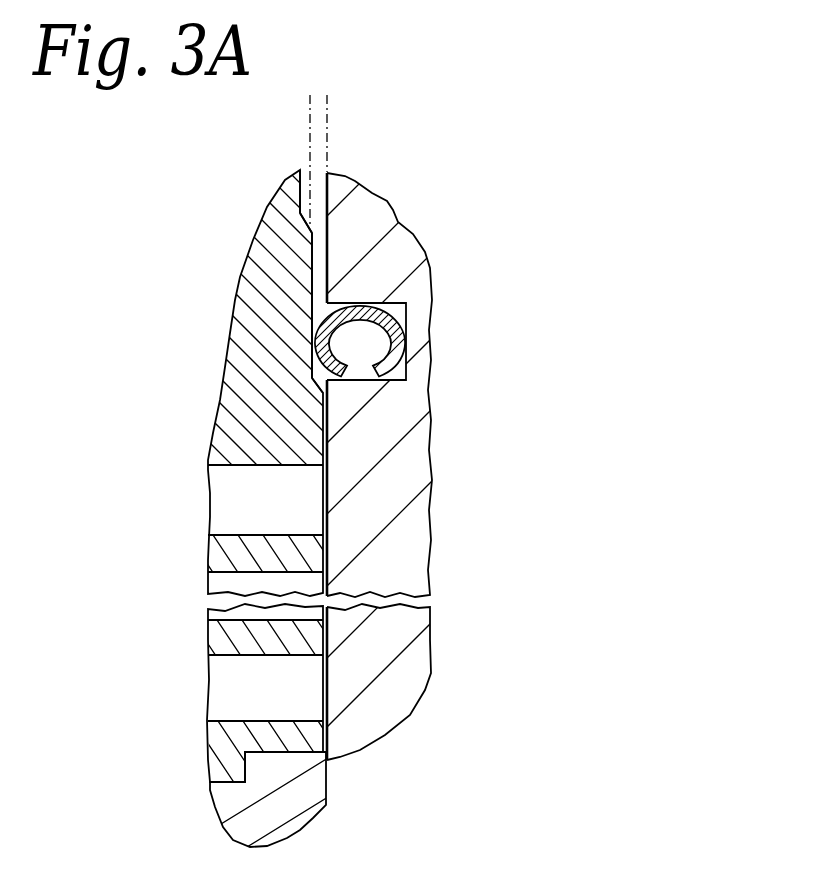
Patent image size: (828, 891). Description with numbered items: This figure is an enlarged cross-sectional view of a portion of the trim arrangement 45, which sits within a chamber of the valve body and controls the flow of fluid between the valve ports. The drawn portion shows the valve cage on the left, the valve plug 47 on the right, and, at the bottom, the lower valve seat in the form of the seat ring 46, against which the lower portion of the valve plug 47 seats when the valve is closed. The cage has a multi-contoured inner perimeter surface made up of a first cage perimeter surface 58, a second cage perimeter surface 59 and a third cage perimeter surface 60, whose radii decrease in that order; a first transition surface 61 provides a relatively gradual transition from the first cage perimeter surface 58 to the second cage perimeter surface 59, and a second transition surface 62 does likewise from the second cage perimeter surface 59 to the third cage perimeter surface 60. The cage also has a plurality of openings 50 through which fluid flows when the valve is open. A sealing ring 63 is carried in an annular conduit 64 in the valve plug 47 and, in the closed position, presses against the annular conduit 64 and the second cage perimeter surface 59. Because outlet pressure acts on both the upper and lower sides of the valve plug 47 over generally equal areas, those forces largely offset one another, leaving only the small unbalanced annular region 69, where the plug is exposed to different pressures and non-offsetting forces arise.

The trim arrangement 45 is at (513, 185).
The seat ring 46 is at (222, 802).
The valve plug 47 is at (417, 515).
The openings 50 is at (232, 502).
The first cage perimeter surface 58 is at (288, 186).
The second cage perimeter surface 59 is at (312, 303).
The third cage perimeter surface 60 is at (322, 438).
The first transition surface 61 is at (312, 228).
The second transition surface 62 is at (320, 388).
The sealing ring 63 is at (401, 338).
The annular conduit 64 is at (428, 259).
The unbalanced annular region 69 is at (272, 115).